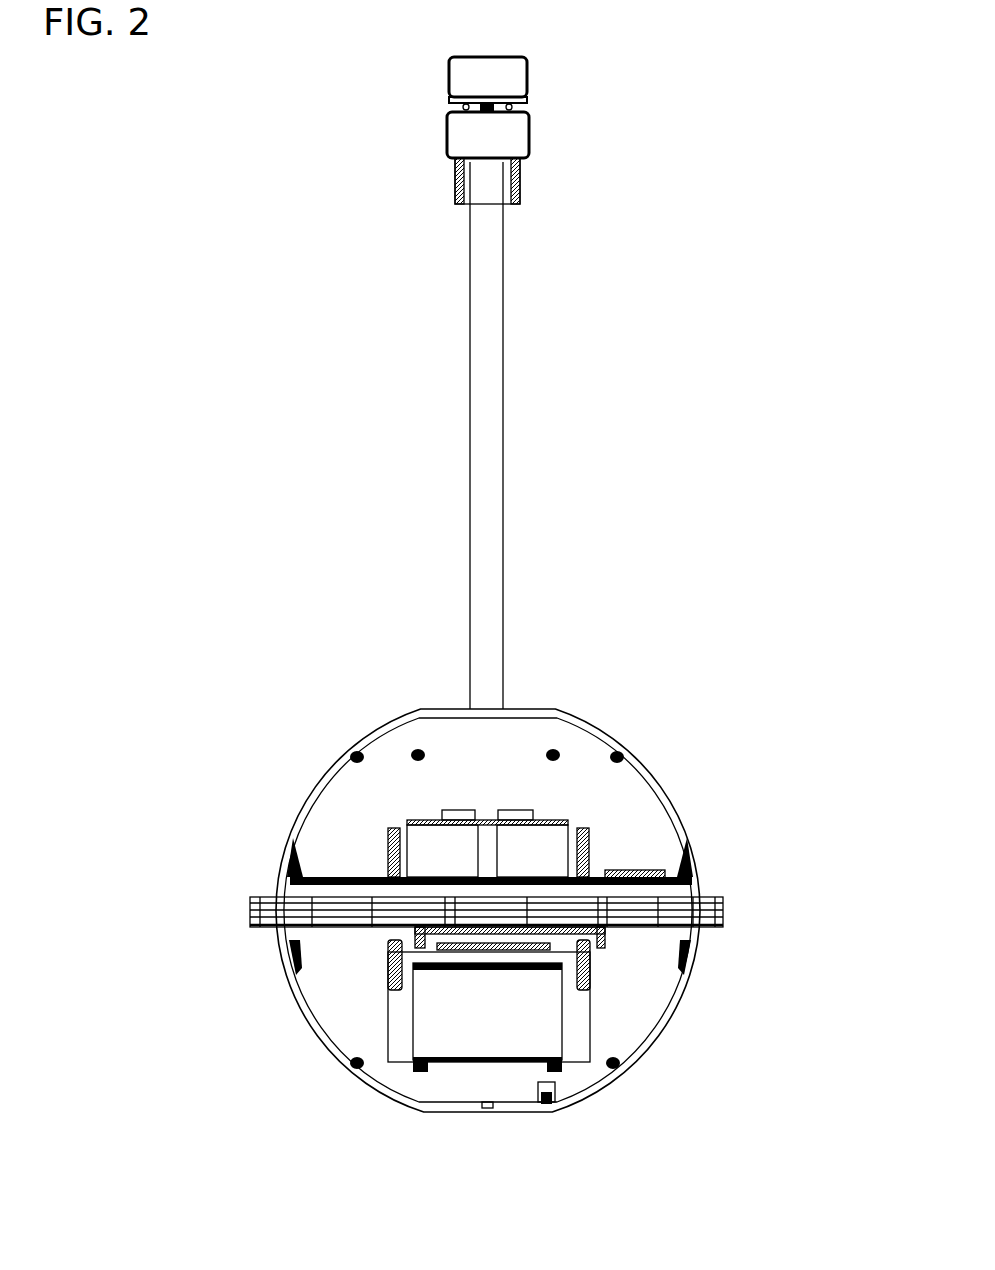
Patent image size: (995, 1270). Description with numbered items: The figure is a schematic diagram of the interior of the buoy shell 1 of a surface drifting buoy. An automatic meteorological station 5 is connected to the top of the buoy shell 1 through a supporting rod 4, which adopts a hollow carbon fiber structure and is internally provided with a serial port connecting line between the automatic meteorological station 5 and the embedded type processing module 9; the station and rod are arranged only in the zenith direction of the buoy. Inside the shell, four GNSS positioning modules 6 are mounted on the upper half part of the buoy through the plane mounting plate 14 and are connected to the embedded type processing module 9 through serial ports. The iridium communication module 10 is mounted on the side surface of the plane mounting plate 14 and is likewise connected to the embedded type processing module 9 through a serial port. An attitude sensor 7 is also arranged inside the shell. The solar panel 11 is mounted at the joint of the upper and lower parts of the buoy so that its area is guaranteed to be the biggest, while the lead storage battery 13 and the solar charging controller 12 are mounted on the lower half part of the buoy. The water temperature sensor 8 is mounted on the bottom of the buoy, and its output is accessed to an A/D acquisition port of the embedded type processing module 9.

The buoy shell 1 is at (343, 752).
The supporting rod 4 is at (508, 458).
The automatic meteorological station 5 is at (533, 135).
The four GNSS positioning modules 6 is at (510, 808).
The attitude sensor 7 is at (490, 952).
The water temperature sensor 8 is at (557, 1090).
The embedded type processing module 9 is at (392, 965).
The iridium communication module 10 is at (657, 870).
The solar panel 11 is at (368, 878).
The solar charging controller 12 is at (647, 938).
The lead storage battery 13 is at (550, 1015).
The plane mounting plate 14 is at (548, 820).